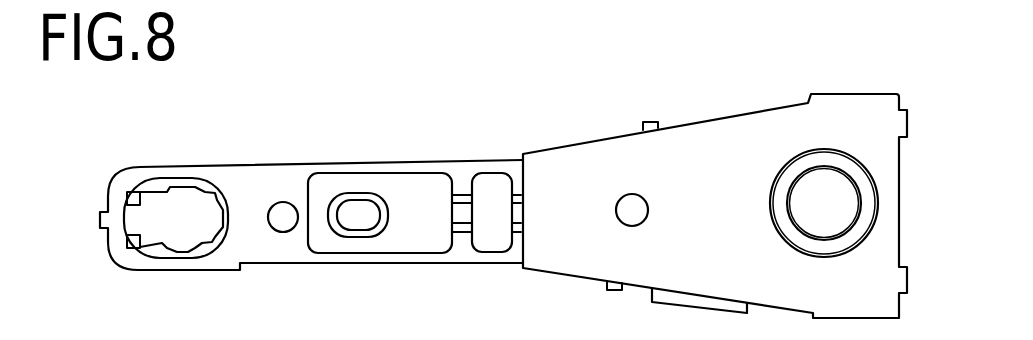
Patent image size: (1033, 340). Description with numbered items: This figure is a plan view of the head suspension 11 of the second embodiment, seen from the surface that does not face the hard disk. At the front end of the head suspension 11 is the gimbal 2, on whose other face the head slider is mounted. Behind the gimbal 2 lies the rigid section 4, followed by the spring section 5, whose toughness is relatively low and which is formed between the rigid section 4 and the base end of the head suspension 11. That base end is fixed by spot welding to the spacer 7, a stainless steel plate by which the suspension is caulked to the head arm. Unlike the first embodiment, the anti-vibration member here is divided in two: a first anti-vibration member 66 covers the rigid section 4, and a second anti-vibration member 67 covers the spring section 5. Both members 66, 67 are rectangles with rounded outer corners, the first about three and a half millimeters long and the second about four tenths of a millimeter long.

The gimbal 2 is at (188, 198).
The rigid section 4 is at (287, 243).
The spring section 5 is at (463, 247).
The spacer 7 is at (730, 132).
The head suspension 11 is at (325, 167).
The first anti-vibration member 66 is at (423, 182).
The second anti-vibration member 67 is at (492, 180).